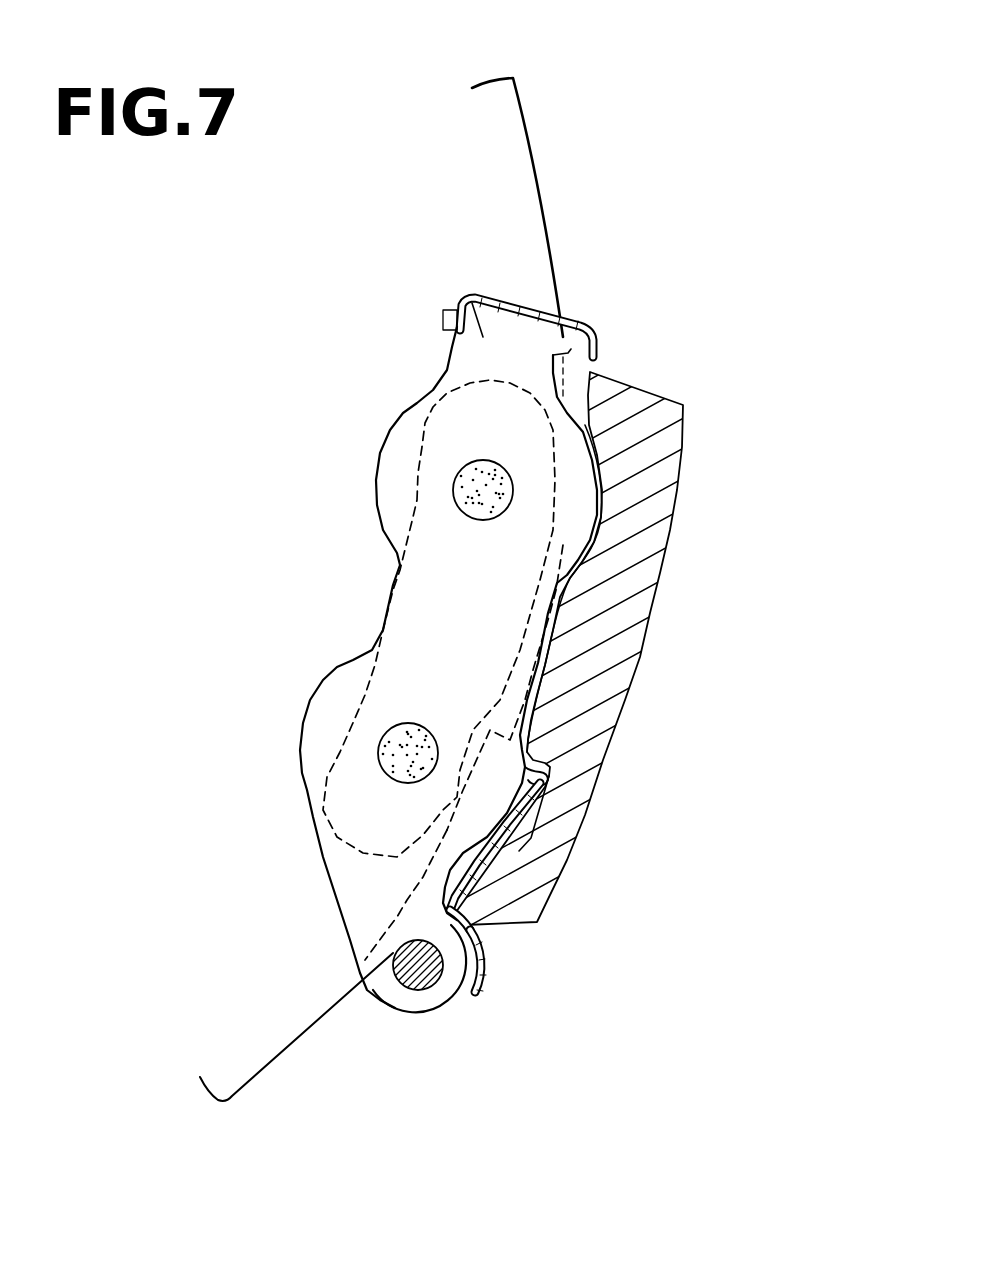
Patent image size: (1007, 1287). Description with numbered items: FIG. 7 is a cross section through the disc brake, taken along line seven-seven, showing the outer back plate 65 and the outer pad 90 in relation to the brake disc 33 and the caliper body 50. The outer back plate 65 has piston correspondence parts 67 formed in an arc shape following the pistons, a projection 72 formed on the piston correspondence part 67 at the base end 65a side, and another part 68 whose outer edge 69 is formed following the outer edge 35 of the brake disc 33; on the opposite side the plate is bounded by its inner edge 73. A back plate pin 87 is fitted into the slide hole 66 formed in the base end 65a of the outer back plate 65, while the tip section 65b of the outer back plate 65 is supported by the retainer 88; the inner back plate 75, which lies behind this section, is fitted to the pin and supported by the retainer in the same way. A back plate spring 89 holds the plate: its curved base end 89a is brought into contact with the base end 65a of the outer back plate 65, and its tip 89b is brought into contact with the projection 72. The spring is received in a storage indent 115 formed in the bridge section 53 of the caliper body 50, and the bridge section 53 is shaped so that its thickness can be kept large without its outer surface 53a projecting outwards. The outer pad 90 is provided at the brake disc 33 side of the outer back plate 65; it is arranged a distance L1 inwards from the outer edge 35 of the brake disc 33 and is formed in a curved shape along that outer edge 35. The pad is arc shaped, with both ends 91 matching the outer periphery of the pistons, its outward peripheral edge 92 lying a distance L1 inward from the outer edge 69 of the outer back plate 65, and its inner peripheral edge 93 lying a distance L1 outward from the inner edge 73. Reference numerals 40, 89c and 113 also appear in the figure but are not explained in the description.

The brake disc 33 is at (557, 141).
The outer edge of the brake disc 35 is at (549, 208).
The brake assembly 40 is at (774, 273).
The caliper body 50 is at (719, 399).
The bridge section 53 is at (660, 450).
The outer surface of the bridge section 53a is at (675, 507).
The outer back plate 65 is at (364, 607).
The inner back plate 75 is at (307, 667).
The base end 65a is at (443, 998).
The tip section 65b is at (468, 296).
The slide hole 66 is at (413, 980).
The piston correspondence parts 67 is at (413, 437).
The another part of the outer back plate 68 is at (447, 613).
The outer edge of the outer back plate 69 is at (550, 665).
The projection 72 is at (520, 792).
The inner edge of the outer back plate 73 is at (380, 628).
The back plate pin 87 is at (395, 1012).
The retainer 88 is at (524, 305).
The back plate spring 89 is at (645, 927).
The curved base end of the back plate spring 89a is at (586, 993).
The tip of the back plate spring 89b is at (545, 818).
The spring middle portion 89c is at (505, 840).
The outer pad 90 is at (401, 485).
The ends of the outer pad 91 is at (493, 385).
The outward peripheral edge 92 is at (558, 547).
The inner peripheral edge 93 is at (375, 673).
The hidden bend line 113 is at (376, 940).
The storage indent 115 is at (548, 765).
The distance L1 is at (496, 602).